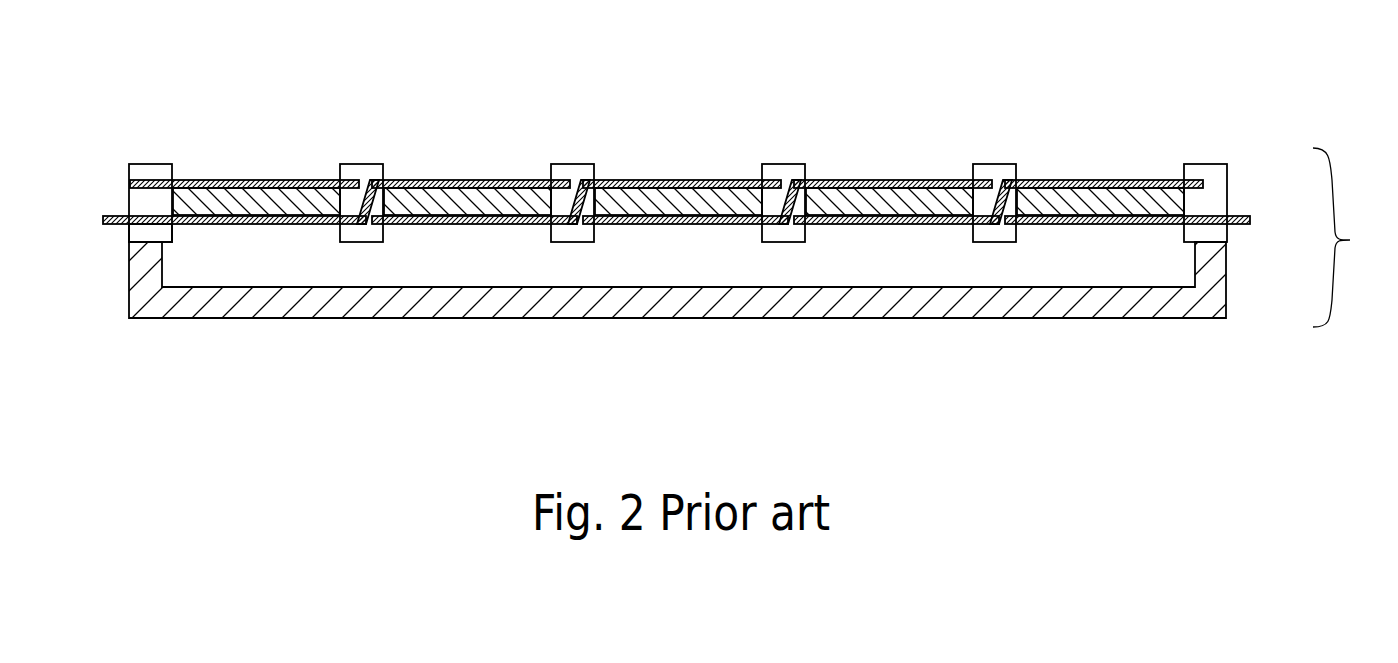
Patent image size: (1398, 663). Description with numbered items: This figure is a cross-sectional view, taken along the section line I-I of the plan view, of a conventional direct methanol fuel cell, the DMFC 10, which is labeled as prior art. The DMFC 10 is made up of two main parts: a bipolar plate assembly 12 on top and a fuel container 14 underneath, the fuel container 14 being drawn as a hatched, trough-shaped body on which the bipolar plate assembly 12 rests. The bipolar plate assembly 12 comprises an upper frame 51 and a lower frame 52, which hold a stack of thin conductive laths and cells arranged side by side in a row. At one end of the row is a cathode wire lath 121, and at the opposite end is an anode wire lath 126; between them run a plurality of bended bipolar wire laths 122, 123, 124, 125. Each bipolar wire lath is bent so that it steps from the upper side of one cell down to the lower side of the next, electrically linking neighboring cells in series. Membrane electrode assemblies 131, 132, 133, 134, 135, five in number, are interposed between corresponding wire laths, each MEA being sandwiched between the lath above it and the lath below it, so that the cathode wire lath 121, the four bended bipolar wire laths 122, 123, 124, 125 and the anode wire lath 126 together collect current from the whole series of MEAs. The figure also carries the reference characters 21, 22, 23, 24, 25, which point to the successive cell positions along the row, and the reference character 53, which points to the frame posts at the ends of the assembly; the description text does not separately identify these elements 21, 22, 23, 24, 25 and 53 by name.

The DMFC 10 is at (1352, 237).
The bipolar plate assembly 12 is at (1265, 192).
The fuel container 14 is at (1237, 292).
The first solar cell 21 is at (241, 183).
The second solar cell 22 is at (481, 183).
The third solar cell 23 is at (692, 183).
The fourth solar cell 24 is at (903, 183).
The fifth solar cell 25 is at (1151, 183).
The cathode wire lath 121 is at (221, 153).
The bended bipolar wire lath 122 is at (433, 152).
The bended bipolar wire lath 123 is at (645, 152).
The bended bipolar wire lath 124 is at (855, 152).
The bended bipolar wire lath 125 is at (1147, 180).
The anode wire lath 126 is at (1250, 220).
The membrane electrode assembly 131 is at (255, 200).
The membrane electrode assembly 132 is at (465, 200).
The membrane electrode assembly 133 is at (678, 200).
The membrane electrode assembly 134 is at (888, 200).
The membrane electrode assembly 135 is at (1098, 200).
The upper frame 51 is at (152, 163).
The lower frame 52 is at (137, 232).
The middle post portion 53 is at (138, 200).